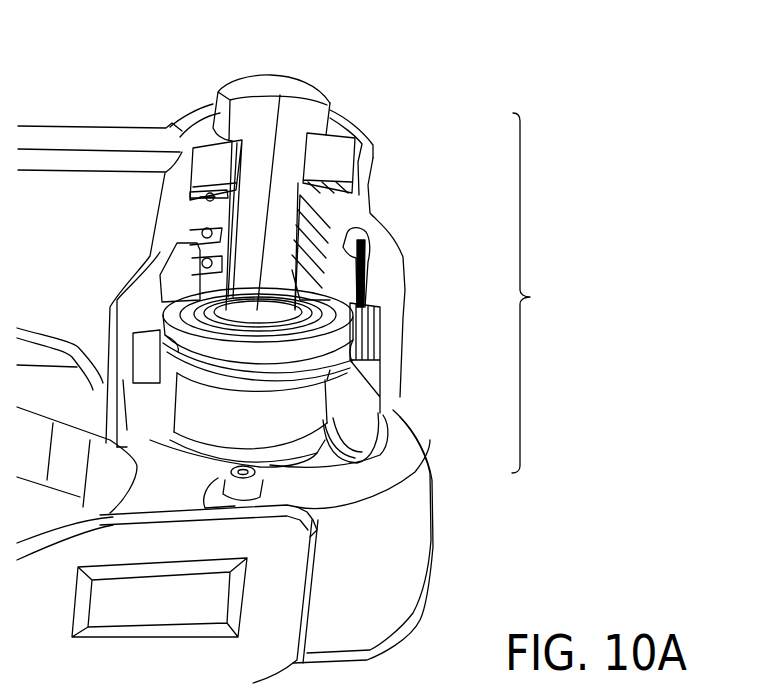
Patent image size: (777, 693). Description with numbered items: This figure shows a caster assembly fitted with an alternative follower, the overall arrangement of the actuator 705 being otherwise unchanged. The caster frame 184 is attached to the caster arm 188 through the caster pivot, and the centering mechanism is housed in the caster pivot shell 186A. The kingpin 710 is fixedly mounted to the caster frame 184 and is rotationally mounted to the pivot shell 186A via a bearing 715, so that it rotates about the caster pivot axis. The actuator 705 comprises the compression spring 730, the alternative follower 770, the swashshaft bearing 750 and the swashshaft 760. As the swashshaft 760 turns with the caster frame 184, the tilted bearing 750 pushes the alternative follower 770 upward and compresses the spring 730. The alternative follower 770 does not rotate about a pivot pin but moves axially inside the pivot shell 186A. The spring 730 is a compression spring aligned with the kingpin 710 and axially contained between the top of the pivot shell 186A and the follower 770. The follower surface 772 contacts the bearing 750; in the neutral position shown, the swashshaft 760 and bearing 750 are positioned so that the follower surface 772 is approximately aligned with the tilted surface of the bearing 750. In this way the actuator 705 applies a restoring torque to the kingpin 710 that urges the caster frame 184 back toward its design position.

The kingpin 710 is at (287, 82).
The bearing 715 is at (335, 150).
The caster arm 188 is at (82, 205).
The caster pivot shell 186A is at (368, 158).
The compression spring 730 is at (322, 230).
The alternative follower 770 is at (340, 270).
The follower surface 772 is at (362, 292).
The swashshaft bearing 750 is at (323, 353).
The swashshaft 760 is at (297, 413).
The caster frame 184 is at (282, 575).
The actuator 705 is at (550, 293).